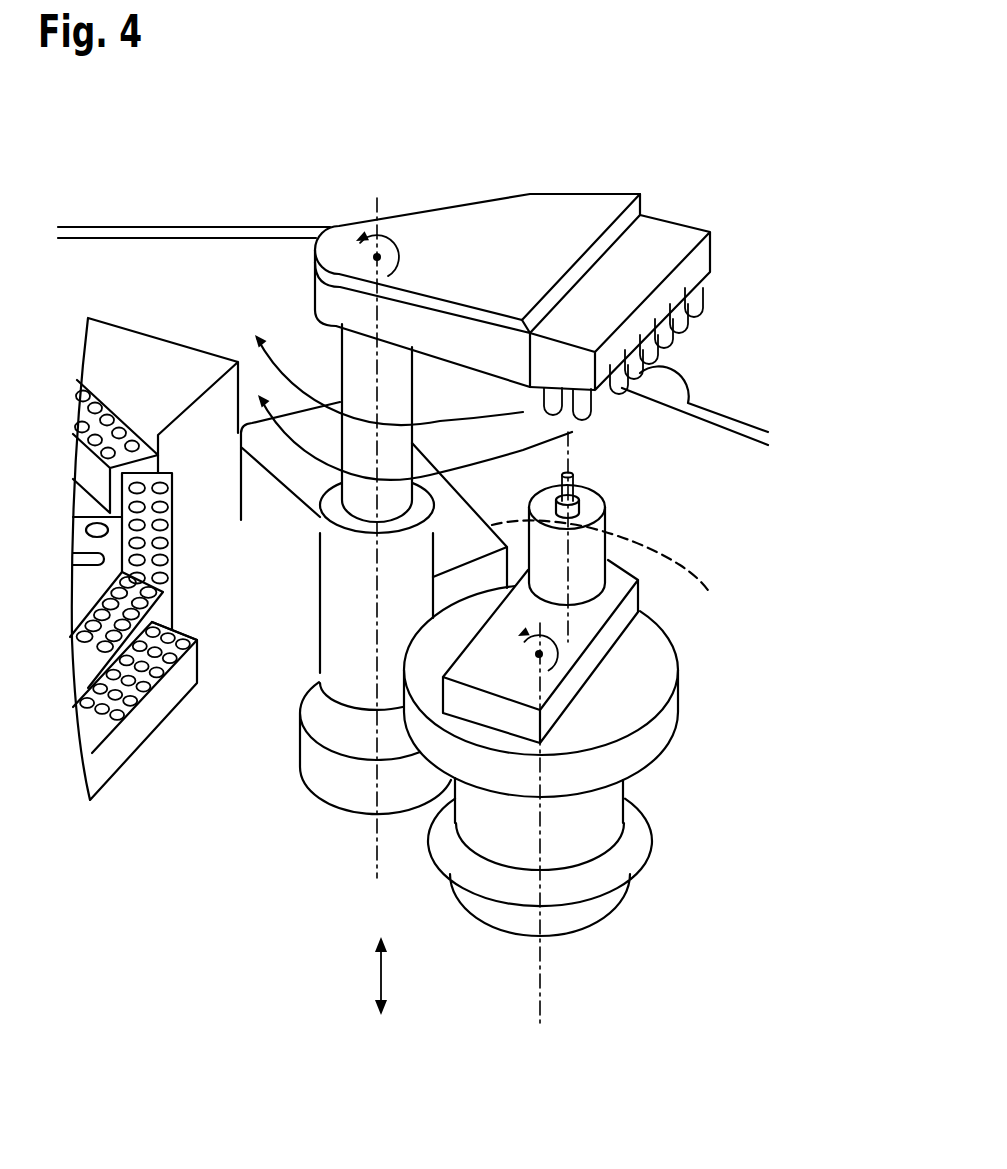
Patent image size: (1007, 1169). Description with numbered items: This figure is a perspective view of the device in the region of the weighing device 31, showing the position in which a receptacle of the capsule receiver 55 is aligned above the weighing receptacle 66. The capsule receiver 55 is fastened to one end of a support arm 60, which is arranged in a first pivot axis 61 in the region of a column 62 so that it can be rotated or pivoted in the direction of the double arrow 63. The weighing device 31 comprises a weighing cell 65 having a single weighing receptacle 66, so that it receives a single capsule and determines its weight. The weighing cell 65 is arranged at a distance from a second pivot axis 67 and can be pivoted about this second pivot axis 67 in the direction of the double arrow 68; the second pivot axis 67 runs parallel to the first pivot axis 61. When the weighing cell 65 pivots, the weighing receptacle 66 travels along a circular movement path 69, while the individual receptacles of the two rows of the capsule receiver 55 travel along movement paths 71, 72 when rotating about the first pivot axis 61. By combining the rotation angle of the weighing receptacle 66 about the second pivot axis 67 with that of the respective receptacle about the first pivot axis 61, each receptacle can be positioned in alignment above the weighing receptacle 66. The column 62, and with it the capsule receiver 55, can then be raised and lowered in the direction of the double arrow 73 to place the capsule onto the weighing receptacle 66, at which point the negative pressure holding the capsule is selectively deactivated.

The weighing device 31 is at (702, 754).
The capsule receiver 55 is at (673, 234).
The support arm 60 is at (470, 220).
The first pivot axis 61 is at (375, 870).
The column 62 is at (338, 628).
The double arrow 63 is at (382, 234).
The weighing cell 65 is at (595, 547).
The weighing receptacle 66 is at (598, 506).
The second pivot axis 67 is at (542, 983).
The double arrow 68 is at (560, 653).
The movement path 69 is at (710, 593).
The movement path 71 is at (260, 398).
The movement path 72 is at (258, 338).
The double arrow 73 is at (383, 973).